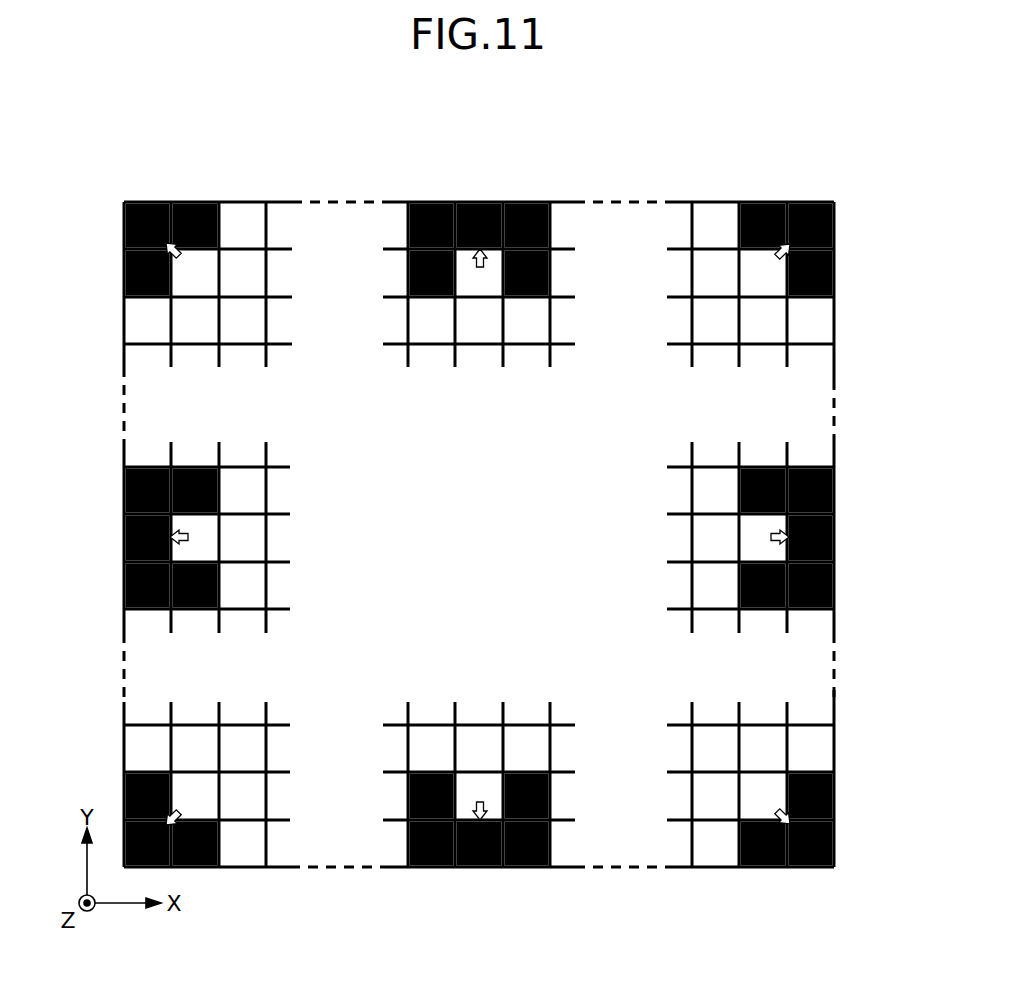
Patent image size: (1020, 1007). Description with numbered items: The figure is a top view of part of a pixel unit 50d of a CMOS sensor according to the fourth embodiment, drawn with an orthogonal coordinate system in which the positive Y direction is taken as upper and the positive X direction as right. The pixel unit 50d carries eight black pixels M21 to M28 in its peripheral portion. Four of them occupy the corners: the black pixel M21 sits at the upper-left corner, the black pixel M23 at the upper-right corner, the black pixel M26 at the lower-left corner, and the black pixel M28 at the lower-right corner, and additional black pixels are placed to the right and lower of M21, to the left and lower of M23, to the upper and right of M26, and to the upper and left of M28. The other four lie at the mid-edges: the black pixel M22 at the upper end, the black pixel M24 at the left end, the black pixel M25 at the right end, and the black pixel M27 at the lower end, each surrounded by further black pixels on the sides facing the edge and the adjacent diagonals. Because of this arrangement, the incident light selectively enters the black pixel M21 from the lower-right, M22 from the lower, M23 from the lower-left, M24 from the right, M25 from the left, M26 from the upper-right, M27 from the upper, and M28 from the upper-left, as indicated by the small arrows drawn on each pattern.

The pixel unit 50d is at (656, 143).
The black pixel M21 is at (124, 212).
The black pixel M22 is at (490, 202).
The black pixel M23 is at (810, 202).
The black pixel M24 is at (124, 537).
The black pixel M25 is at (834, 537).
The black pixel M26 is at (124, 847).
The black pixel M27 is at (490, 868).
The black pixel M28 is at (812, 868).